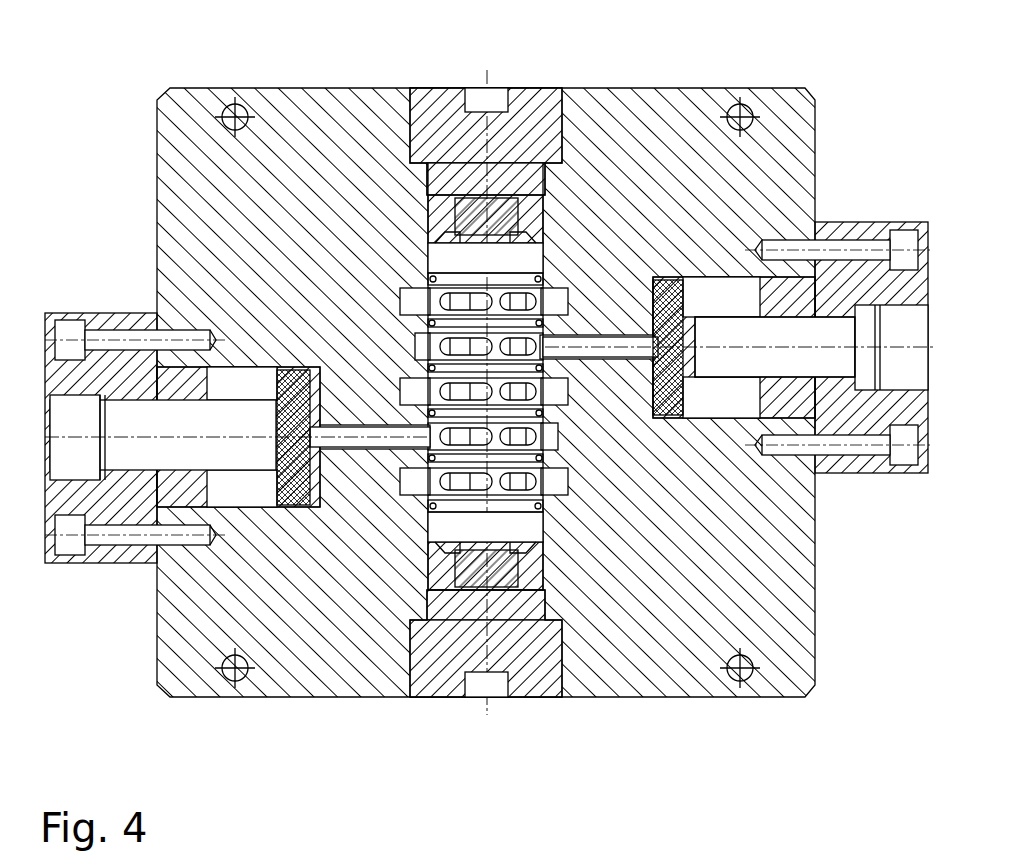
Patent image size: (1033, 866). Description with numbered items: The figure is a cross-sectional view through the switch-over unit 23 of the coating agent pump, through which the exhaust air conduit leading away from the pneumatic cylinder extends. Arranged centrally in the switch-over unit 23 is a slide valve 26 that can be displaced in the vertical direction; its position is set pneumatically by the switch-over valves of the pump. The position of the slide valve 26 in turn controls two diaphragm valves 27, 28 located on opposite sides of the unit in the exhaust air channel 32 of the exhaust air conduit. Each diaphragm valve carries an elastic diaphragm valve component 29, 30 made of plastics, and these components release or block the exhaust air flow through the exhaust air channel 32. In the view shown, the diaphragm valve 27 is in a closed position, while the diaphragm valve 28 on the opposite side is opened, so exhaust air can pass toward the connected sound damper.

The switch-over unit 23 is at (660, 130).
The slide valve 26 is at (467, 257).
The diaphragm valve 27 is at (293, 533).
The diaphragm valve 28 is at (672, 432).
The diaphragm valve component 29 is at (293, 370).
The diaphragm valve component 30 is at (657, 277).
The exhaust air channel 32 is at (832, 333).